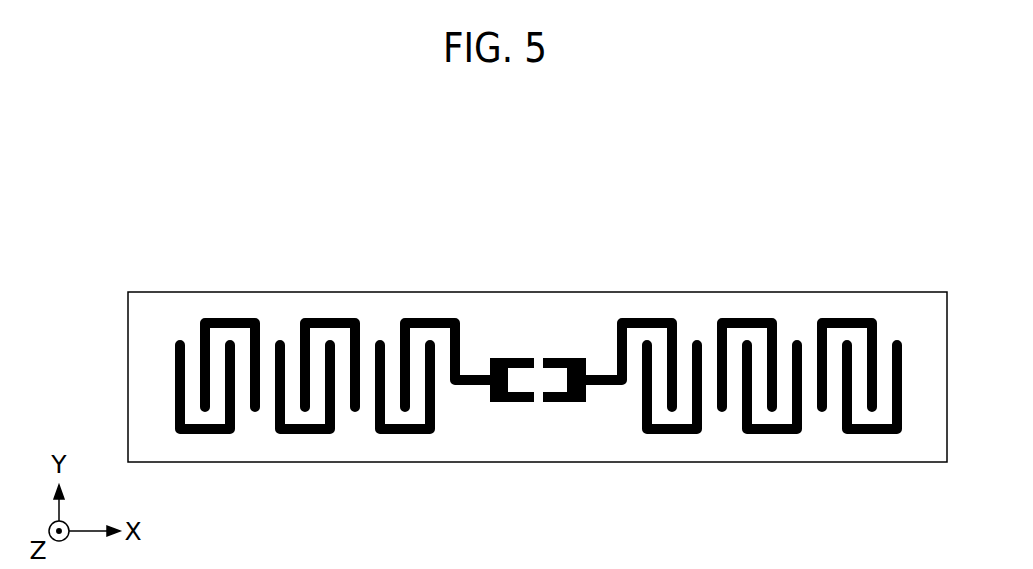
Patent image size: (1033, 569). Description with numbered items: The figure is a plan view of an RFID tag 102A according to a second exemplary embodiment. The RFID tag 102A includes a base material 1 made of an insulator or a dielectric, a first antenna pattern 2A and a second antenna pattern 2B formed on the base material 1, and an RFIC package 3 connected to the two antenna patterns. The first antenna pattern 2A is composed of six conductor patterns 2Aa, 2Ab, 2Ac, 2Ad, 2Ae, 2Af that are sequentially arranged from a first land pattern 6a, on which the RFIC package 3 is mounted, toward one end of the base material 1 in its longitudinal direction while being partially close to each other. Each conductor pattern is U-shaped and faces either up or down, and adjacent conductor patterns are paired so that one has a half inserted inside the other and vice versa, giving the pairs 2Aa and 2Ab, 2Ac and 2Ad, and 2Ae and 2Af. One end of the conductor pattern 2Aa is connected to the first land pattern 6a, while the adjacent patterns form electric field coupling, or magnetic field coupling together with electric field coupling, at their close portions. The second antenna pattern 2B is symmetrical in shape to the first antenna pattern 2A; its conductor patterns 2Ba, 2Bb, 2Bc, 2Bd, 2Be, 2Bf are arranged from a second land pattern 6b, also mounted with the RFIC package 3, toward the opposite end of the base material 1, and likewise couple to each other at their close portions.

The RFID tag 102A is at (604, 136).
The base material 1 is at (557, 301).
The first antenna pattern 2A is at (462, 243).
The second antenna pattern 2B is at (608, 243).
The conductor pattern 2Aa is at (432, 318).
The conductor pattern 2Ab is at (398, 435).
The conductor pattern 2Ac is at (328, 318).
The conductor pattern 2Ad is at (298, 435).
The conductor pattern 2Ae is at (228, 318).
The conductor pattern 2Af is at (198, 435).
The conductor pattern 2Ba is at (643, 318).
The conductor pattern 2Bb is at (673, 435).
The conductor pattern 2Bc is at (745, 318).
The conductor pattern 2Bd is at (773, 435).
The conductor pattern 2Be is at (845, 318).
The conductor pattern 2Bf is at (875, 435).
The RFIC package 3 is at (538, 375).
The first land pattern 6a is at (498, 402).
The second land pattern 6b is at (575, 358).